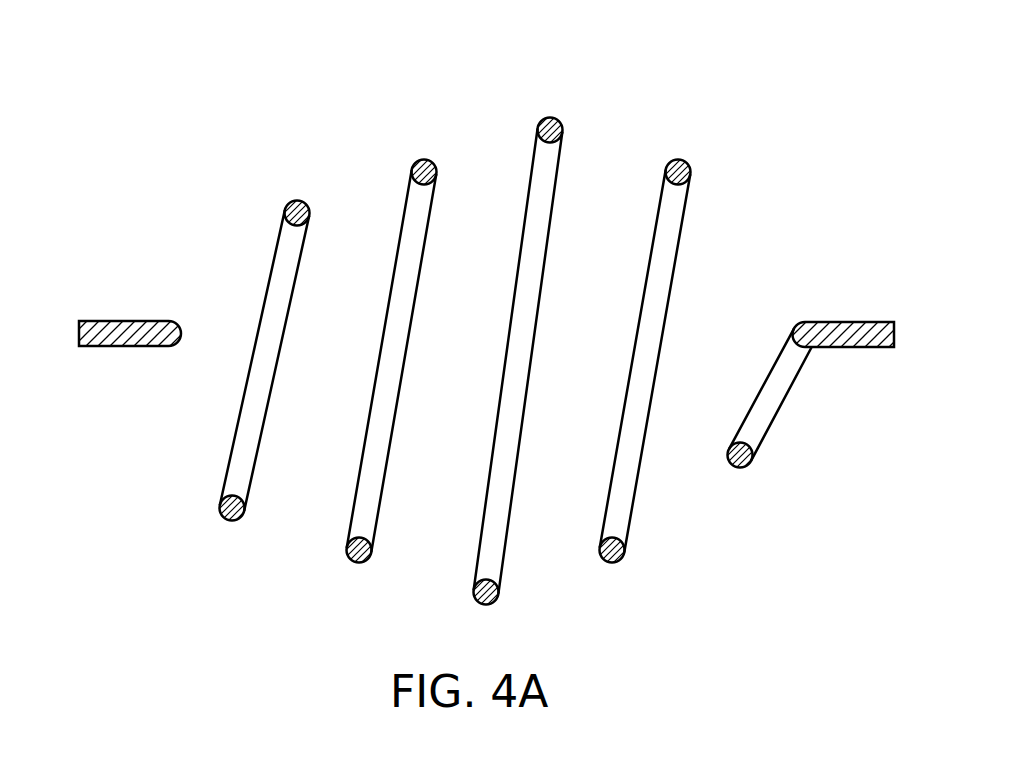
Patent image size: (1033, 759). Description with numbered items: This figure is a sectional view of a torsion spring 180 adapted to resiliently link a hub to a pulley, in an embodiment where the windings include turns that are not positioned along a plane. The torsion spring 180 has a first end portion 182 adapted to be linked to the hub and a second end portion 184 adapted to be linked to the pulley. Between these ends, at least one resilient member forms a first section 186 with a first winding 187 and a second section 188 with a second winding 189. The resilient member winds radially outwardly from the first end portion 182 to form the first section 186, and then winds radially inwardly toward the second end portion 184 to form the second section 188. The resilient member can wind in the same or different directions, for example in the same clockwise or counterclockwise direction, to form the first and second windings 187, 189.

The torsion spring 180 is at (488, 356).
The first end portion 182 is at (831, 338).
The second end portion 184 is at (111, 277).
The first section 186 is at (641, 326).
The first winding 187 is at (714, 340).
The second section 188 is at (366, 311).
The second winding 189 is at (241, 314).